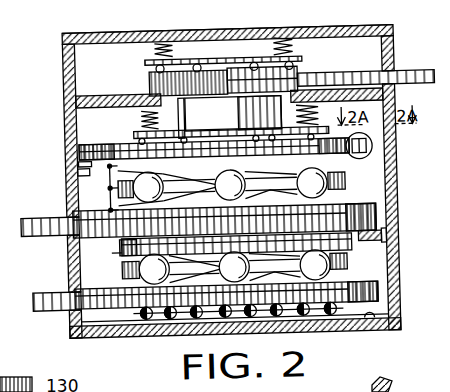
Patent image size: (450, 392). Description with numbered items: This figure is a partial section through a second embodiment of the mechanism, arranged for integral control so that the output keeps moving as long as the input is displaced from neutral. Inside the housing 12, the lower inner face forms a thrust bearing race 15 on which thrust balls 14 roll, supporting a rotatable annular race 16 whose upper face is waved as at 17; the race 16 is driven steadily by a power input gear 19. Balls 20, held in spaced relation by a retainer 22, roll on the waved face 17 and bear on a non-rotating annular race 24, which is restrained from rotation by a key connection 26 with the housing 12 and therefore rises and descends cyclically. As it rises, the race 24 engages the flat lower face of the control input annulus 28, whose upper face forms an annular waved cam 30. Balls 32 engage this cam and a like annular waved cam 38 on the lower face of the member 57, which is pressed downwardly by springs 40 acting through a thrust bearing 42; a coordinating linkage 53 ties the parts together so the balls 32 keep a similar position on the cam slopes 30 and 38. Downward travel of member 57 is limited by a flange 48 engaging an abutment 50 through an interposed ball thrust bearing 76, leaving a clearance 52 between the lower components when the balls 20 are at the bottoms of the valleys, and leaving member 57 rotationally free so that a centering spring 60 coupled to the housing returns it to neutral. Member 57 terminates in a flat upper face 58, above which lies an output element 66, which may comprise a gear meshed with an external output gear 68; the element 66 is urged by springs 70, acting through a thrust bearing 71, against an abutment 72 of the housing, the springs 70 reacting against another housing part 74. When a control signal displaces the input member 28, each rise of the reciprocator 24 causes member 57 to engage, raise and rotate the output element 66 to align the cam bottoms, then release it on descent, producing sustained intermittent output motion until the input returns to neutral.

The housing 12 is at (395, 53).
The thrust balls 14 is at (150, 320).
The thrust bearing race 15 is at (368, 326).
The rotatable annular race 16 is at (376, 297).
The waved face 17 is at (130, 281).
The power input gear 19 is at (50, 288).
The balls 20 is at (235, 266).
The retainer 22 is at (345, 272).
The non-rotating annular race 24 is at (185, 257).
The key connection 26 is at (386, 244).
The control input annulus 28 is at (385, 215).
The annular waved cam 30 is at (347, 197).
The balls 32 is at (230, 184).
The annular waved cam 38 is at (261, 178).
The springs 40 is at (140, 127).
The thrust bearing 42 is at (190, 127).
The flange 48 is at (80, 146).
The abutment 50 is at (79, 168).
The clearance 52 is at (125, 242).
The coordinating linkage 53 is at (108, 183).
The member 57 is at (204, 169).
The upper face 58 is at (204, 112).
The centering spring 60 is at (386, 164).
The output element 66 is at (150, 83).
The external output gear 68 is at (349, 60).
The springs 70 is at (160, 49).
The thrust bearing 71 is at (158, 68).
The abutment 72 is at (142, 113).
The housing part 74 is at (180, 31).
The ball thrust bearing 76 is at (80, 159).